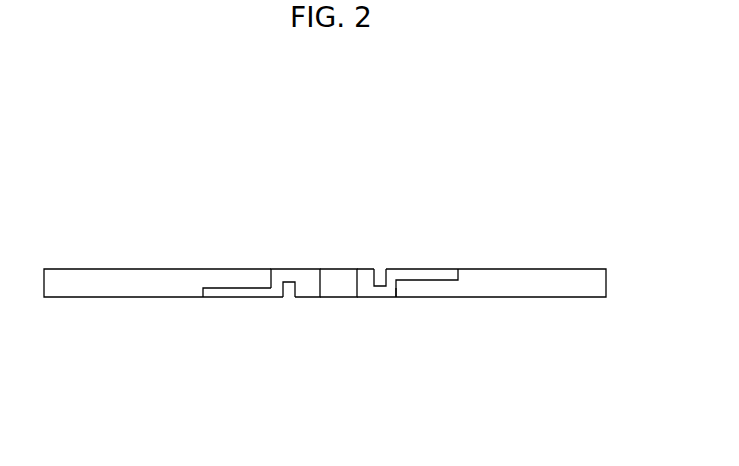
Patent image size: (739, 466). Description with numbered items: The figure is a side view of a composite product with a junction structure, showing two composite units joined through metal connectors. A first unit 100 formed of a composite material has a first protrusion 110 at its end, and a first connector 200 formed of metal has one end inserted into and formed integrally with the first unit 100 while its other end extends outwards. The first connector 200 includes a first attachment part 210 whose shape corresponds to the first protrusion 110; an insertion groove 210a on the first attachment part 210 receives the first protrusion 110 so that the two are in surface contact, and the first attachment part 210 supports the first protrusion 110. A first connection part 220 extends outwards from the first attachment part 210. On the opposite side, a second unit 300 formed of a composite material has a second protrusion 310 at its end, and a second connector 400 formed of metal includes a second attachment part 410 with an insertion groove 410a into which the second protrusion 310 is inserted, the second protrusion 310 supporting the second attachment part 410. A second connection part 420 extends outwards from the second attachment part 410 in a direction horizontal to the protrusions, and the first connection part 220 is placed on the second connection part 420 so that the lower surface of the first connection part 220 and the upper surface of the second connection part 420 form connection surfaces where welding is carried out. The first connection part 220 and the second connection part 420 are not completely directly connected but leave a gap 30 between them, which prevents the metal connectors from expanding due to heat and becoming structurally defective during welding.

The first unit 100 is at (92, 269).
The first protrusion 110 is at (234, 275).
The first attachment part 210 is at (217, 292).
The insertion groove 210a is at (250, 292).
The first connection part 220 is at (292, 270).
The gap 30 is at (287, 292).
The first connector 200 is at (310, 269).
The second connection part 420 is at (377, 293).
The second connector 400 is at (406, 269).
The second attachment part 410 is at (433, 272).
The insertion groove 410a is at (443, 282).
The second protrusion 310 is at (422, 292).
The second unit 300 is at (558, 269).